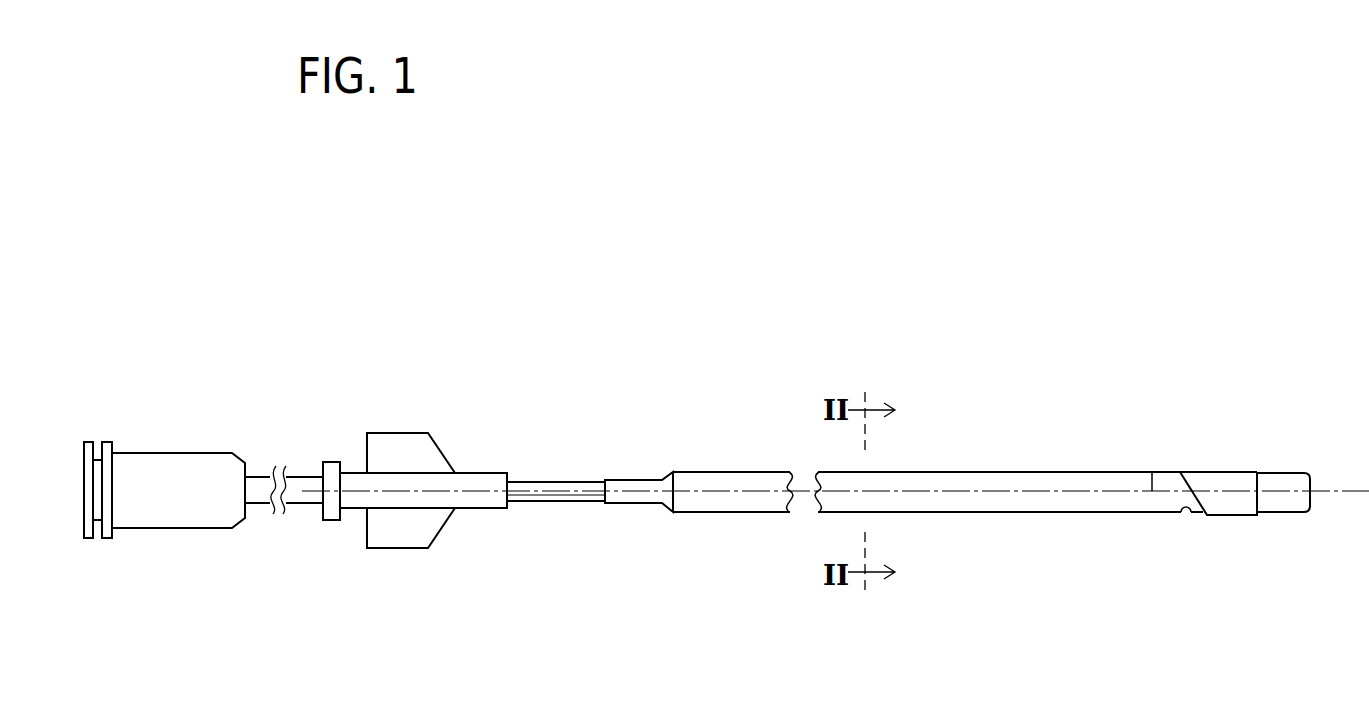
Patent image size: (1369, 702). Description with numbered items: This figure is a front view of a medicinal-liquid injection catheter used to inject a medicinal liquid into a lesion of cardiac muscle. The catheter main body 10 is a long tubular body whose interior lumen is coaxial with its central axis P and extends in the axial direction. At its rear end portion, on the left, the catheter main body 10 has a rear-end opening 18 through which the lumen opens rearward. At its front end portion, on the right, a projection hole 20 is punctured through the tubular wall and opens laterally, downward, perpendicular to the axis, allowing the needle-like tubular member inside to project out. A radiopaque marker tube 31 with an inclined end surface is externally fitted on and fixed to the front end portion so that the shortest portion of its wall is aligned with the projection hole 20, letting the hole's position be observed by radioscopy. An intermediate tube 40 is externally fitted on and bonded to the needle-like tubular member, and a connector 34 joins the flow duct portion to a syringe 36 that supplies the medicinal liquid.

The catheter main body 10 is at (735, 455).
The rear-end opening 18 is at (600, 502).
The projection hole 20 is at (1185, 512).
The marker tube 31 is at (1217, 480).
The connector 34 is at (358, 502).
The syringe 36 is at (170, 468).
The intermediate tube 40 is at (557, 487).
The central axis P is at (1152, 465).